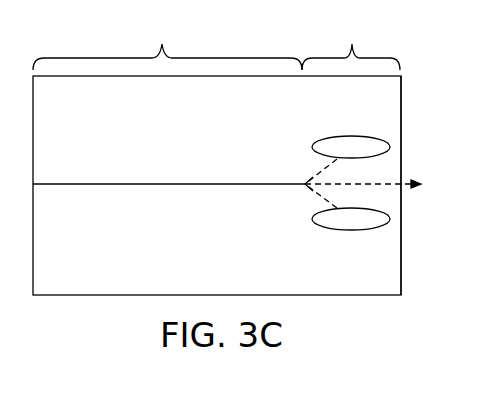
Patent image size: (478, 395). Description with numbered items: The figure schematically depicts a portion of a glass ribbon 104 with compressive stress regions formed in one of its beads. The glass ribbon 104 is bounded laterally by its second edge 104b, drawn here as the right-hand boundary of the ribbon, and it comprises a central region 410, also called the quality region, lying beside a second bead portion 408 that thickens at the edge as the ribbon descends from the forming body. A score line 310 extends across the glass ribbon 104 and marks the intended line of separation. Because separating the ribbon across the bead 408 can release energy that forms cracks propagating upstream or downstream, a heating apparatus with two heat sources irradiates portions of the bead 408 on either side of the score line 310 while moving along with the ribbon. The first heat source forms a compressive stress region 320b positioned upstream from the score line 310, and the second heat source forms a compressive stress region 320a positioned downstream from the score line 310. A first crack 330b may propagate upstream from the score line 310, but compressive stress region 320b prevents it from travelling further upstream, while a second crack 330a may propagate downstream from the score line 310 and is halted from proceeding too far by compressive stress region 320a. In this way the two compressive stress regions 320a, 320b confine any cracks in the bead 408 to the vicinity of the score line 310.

The glass ribbon 104 is at (370, 304).
The second edge 104b is at (401, 241).
The score line 310 is at (133, 184).
The compressive stress region 320a is at (353, 230).
The compressive stress region 320b is at (352, 136).
The second crack 330a is at (313, 196).
The first crack 330b is at (313, 172).
The second bead portion 408 is at (351, 43).
The central region 410 is at (167, 43).